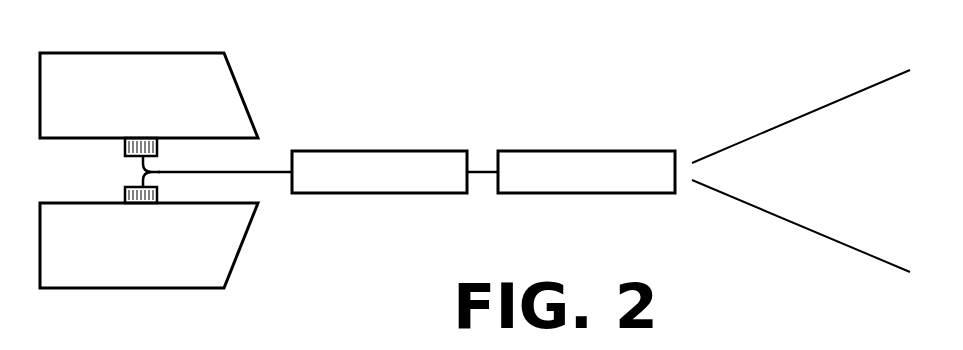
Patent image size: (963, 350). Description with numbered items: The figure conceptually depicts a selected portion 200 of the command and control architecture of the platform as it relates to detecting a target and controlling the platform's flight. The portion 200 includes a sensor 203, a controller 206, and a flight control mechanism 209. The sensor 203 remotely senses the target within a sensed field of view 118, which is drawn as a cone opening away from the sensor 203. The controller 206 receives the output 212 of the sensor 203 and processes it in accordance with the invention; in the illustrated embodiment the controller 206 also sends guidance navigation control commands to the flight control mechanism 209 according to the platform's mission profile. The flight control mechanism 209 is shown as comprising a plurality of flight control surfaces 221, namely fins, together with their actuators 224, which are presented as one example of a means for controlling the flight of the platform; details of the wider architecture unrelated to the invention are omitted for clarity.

The selected portion of the command and control architecture 200 is at (755, 26).
The flight control mechanism 209 is at (270, 27).
The flight control surfaces 221 is at (243, 103).
The actuators 224 is at (121, 189).
The controller 206 is at (378, 150).
The output 212 is at (483, 169).
The sensor 203 is at (587, 150).
The sensed field of view 118 is at (891, 180).